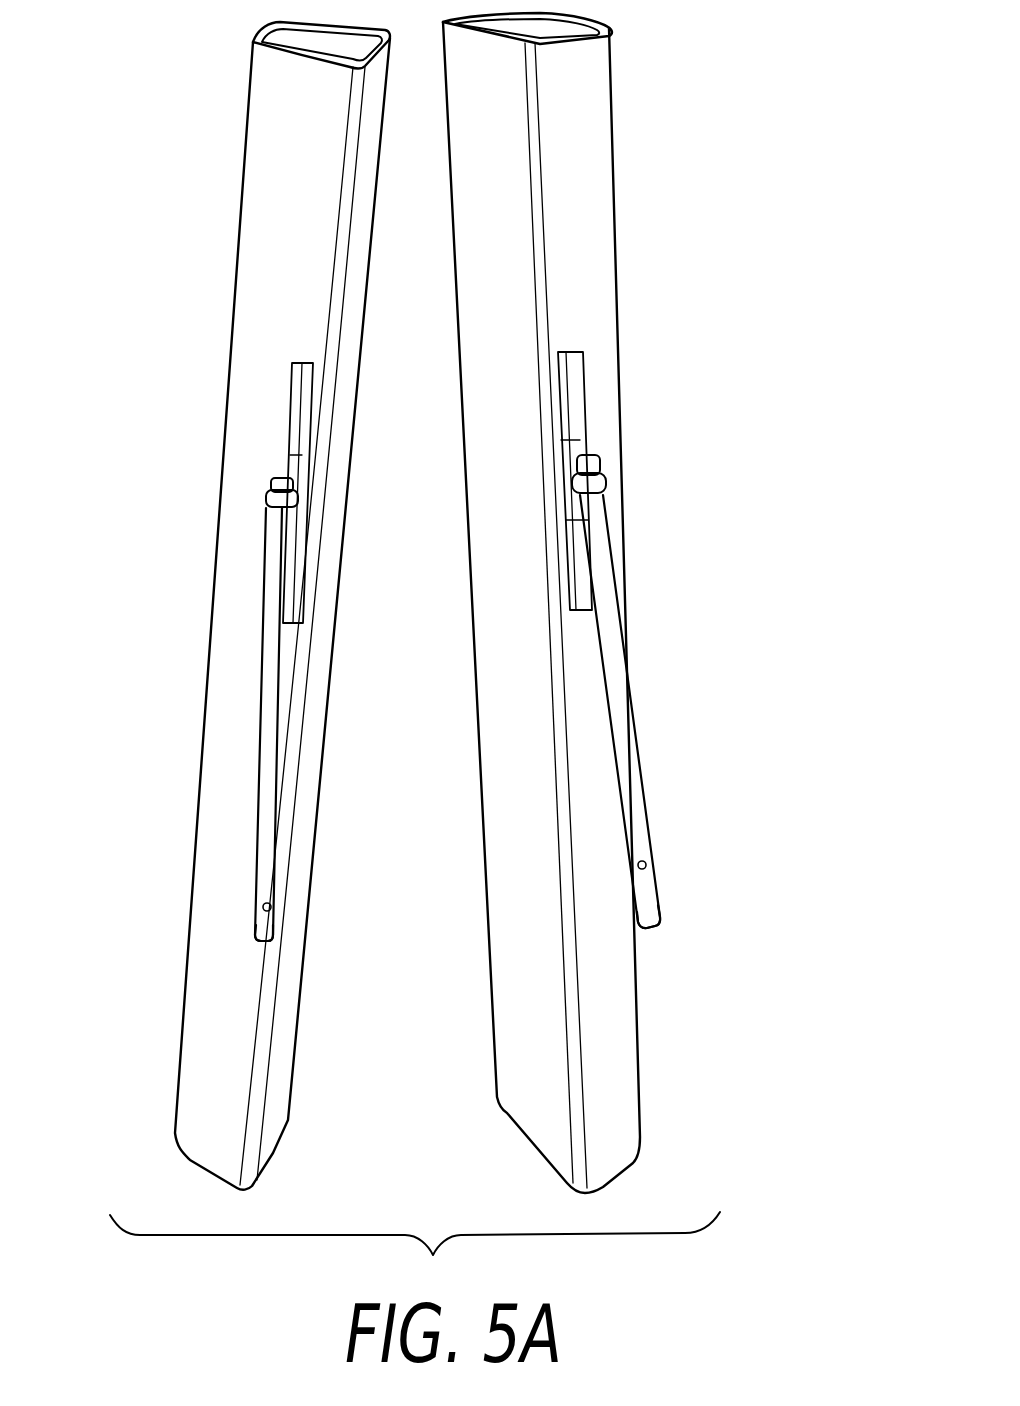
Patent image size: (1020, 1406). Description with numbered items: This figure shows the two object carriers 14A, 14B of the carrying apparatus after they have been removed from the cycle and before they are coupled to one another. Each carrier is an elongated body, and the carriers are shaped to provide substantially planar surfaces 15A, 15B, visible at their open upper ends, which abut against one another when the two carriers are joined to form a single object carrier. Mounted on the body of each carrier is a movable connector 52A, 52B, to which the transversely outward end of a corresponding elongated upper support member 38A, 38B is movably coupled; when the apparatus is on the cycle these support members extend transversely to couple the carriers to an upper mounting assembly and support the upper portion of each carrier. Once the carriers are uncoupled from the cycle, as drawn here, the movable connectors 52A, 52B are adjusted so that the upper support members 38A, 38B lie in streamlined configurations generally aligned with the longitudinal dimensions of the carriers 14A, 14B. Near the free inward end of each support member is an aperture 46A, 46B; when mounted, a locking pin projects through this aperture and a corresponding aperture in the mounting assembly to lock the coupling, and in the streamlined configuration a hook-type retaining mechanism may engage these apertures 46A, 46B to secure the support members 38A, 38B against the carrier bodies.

The object carrier 14A is at (278, 302).
The object carrier 14B is at (583, 285).
The substantially planar surface 15A is at (367, 163).
The substantially planar surface 15B is at (490, 142).
The movable connector 52A is at (288, 460).
The movable connector 52B is at (580, 448).
The upper support member 38A is at (273, 670).
The upper support member 38B is at (613, 633).
The aperture 46A is at (263, 907).
The aperture 46B is at (647, 860).